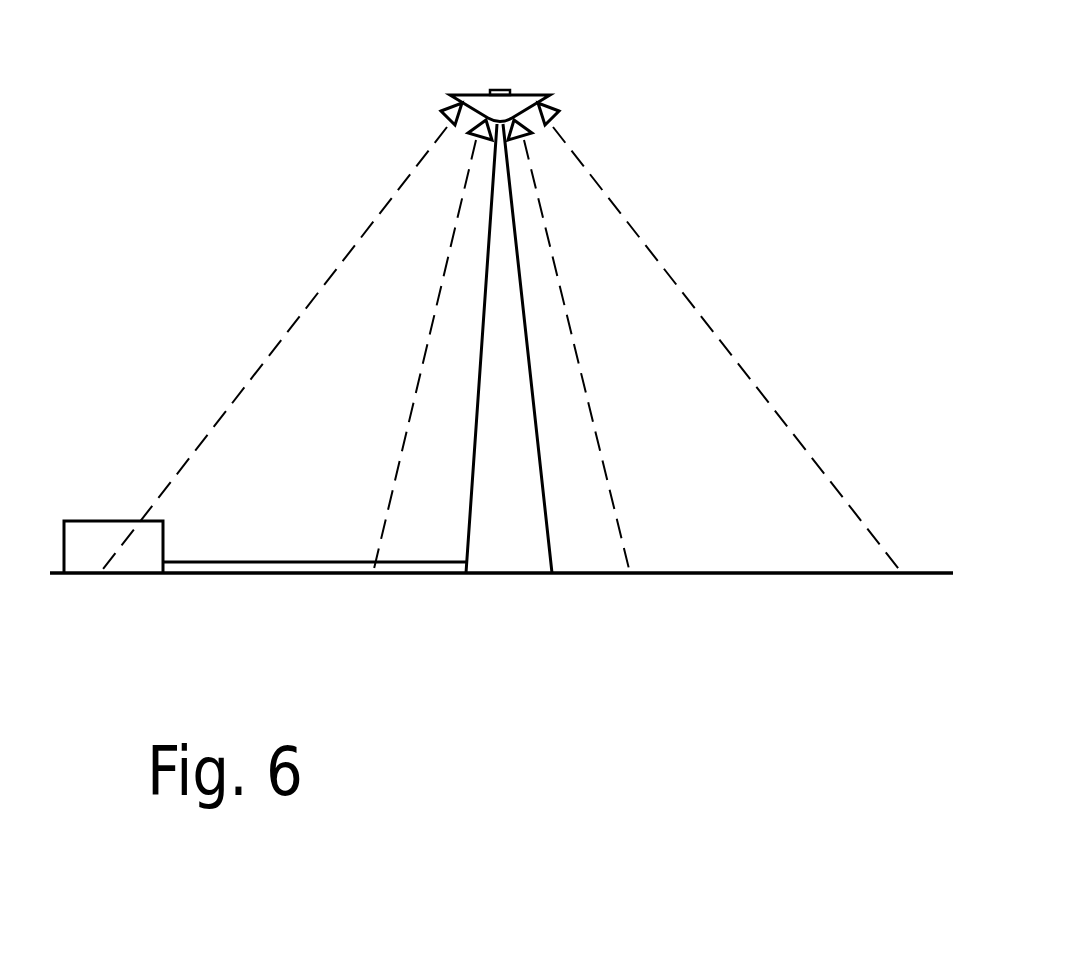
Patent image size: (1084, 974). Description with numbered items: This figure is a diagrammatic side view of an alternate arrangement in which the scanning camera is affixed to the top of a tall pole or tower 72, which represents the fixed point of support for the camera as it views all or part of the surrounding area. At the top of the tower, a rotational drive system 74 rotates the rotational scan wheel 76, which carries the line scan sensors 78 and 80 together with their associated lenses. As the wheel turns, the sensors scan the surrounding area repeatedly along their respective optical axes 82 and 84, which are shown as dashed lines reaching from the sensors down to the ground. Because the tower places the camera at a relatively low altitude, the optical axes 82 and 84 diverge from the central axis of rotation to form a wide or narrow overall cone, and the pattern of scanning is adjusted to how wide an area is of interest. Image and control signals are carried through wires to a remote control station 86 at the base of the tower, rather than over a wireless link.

The pole or tower 72 is at (518, 378).
The rotational drive system 74 is at (503, 90).
The rotational scan wheel 76 is at (472, 97).
The line scan sensor 78 is at (473, 133).
The line scan sensor 80 is at (555, 107).
The optical axis 82 is at (460, 200).
The optical axis 84 is at (582, 158).
The remote control station 86 is at (117, 522).